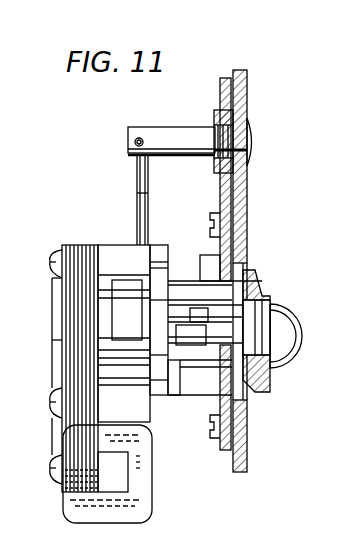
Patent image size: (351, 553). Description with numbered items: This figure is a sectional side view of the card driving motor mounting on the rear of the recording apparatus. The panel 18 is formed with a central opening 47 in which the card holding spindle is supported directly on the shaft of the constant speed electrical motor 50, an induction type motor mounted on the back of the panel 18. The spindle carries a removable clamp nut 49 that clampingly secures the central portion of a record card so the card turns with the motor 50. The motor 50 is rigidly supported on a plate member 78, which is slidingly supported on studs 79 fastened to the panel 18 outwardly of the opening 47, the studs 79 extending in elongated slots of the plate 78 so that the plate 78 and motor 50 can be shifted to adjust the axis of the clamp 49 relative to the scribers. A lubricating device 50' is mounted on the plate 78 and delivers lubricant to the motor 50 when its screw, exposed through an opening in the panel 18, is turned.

The panel 18 is at (246, 468).
The central opening 47 is at (244, 268).
The clamp nut 49 is at (282, 308).
The constant speed electrical motor 50 is at (89, 384).
The lubricating device 50' is at (187, 170).
The plate member 78 is at (229, 186).
The studs 79 is at (209, 223).